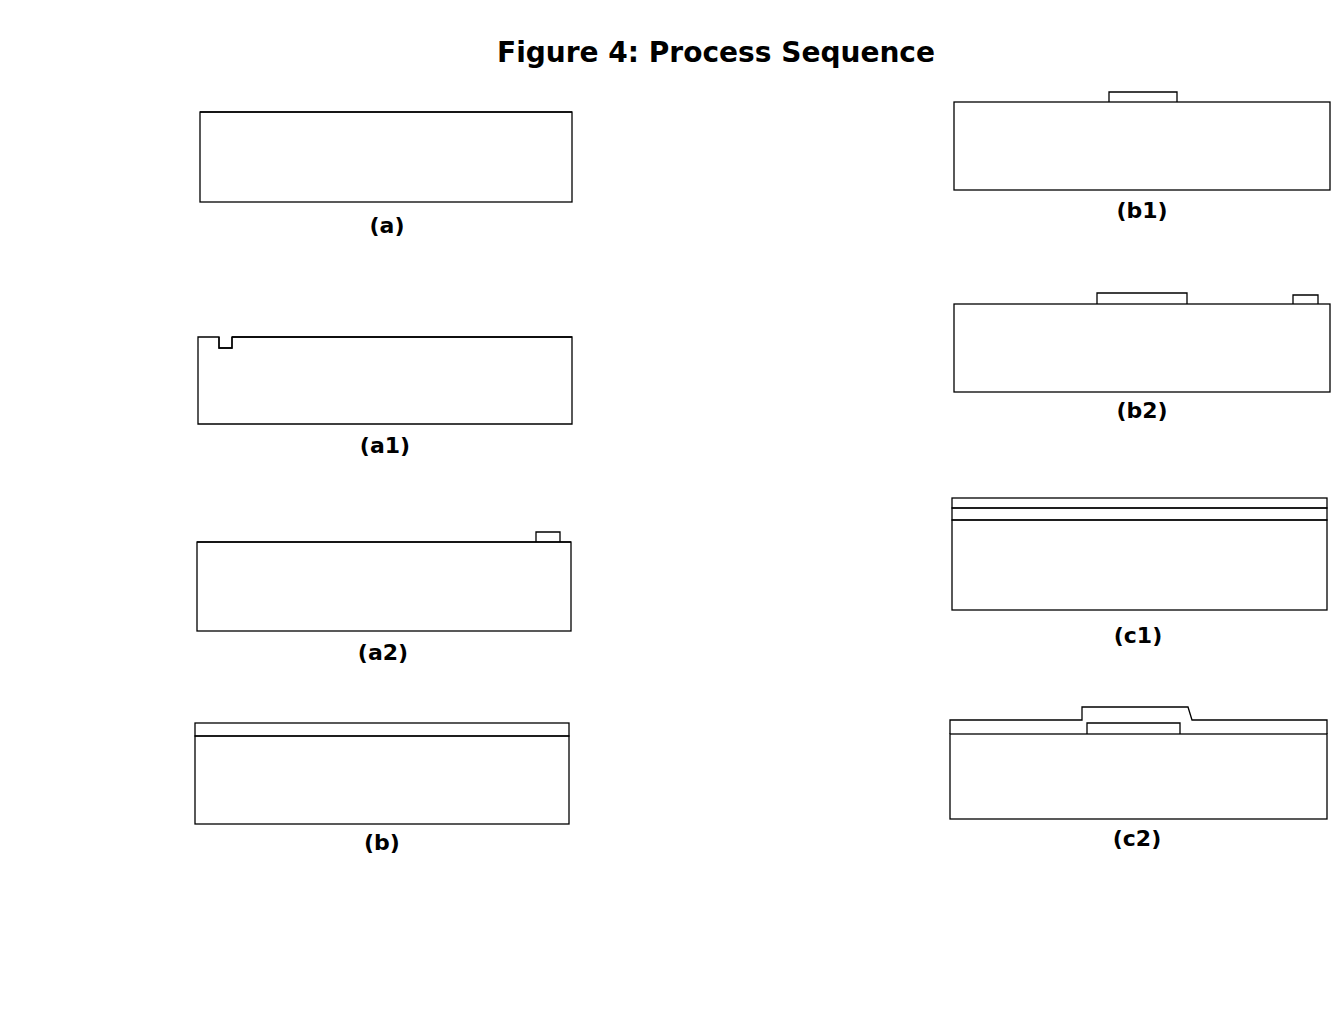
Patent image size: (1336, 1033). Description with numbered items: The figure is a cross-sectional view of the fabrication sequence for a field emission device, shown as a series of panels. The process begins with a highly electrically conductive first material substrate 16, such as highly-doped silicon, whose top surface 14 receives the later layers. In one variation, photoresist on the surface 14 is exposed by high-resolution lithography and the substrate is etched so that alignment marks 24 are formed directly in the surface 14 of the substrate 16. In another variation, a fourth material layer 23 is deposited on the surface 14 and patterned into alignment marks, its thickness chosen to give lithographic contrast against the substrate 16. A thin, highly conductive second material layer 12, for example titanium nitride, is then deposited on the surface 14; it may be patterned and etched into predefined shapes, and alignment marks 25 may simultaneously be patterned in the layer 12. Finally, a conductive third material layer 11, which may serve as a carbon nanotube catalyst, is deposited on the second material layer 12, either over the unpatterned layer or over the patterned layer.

The first material substrate 16 is at (218, 134).
The surface of the first material substrate 14 is at (373, 109).
The alignment marks 24 is at (226, 334).
The fourth material layer 23 is at (549, 529).
The second material layer 12 is at (208, 723).
The alignment marks 25 is at (1306, 293).
The third material layer 11 is at (1196, 496).